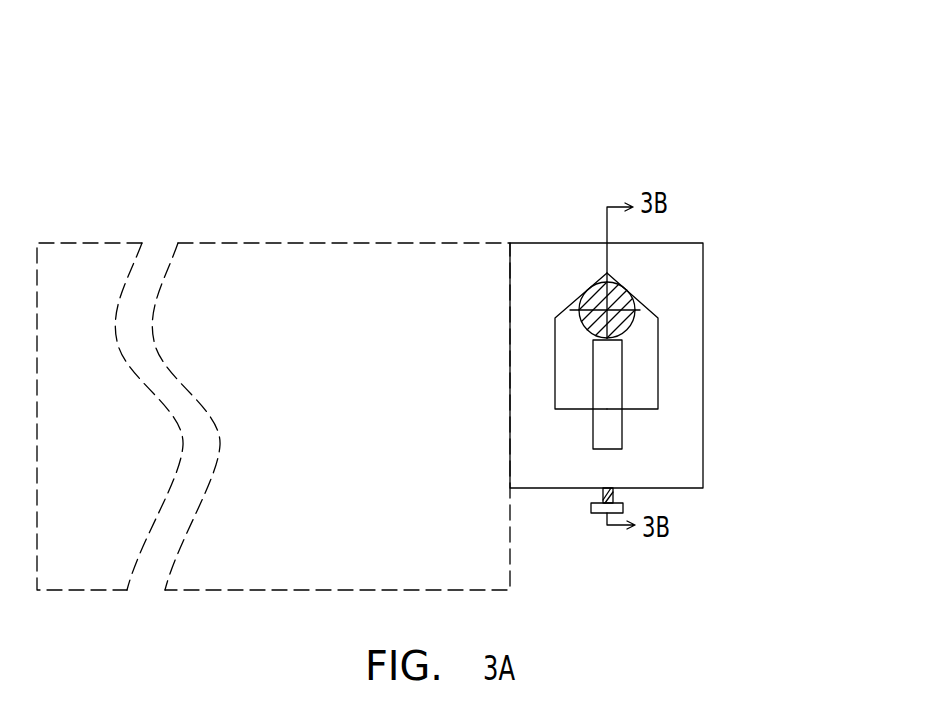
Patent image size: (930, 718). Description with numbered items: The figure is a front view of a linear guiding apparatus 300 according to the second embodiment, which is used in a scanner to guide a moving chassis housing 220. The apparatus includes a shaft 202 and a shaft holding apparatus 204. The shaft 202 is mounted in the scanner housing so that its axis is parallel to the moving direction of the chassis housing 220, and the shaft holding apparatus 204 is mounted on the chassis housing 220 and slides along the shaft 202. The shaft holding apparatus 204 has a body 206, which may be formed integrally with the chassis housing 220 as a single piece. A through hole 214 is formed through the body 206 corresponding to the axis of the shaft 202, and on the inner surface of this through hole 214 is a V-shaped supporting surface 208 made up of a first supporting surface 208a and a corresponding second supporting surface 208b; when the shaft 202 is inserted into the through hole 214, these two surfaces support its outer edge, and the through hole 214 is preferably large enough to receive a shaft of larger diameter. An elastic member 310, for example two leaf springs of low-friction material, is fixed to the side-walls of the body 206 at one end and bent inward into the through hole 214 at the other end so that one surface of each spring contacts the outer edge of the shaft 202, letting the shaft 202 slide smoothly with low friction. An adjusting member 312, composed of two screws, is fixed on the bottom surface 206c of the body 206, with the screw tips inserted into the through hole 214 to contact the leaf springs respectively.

The linear guiding apparatus 300 is at (757, 45).
The chassis housing 220 is at (247, 243).
The shaft 202 is at (580, 321).
The shaft holding apparatus 204 is at (790, 363).
The body 206 is at (703, 433).
The bottom surface 206c is at (570, 488).
The V-shaped supporting surface 208 is at (633, 135).
The first supporting surface 208a is at (585, 291).
The second supporting surface 208b is at (625, 291).
The through hole 214 is at (638, 345).
The elastic member 310 is at (623, 422).
The adjusting member 312 is at (623, 508).